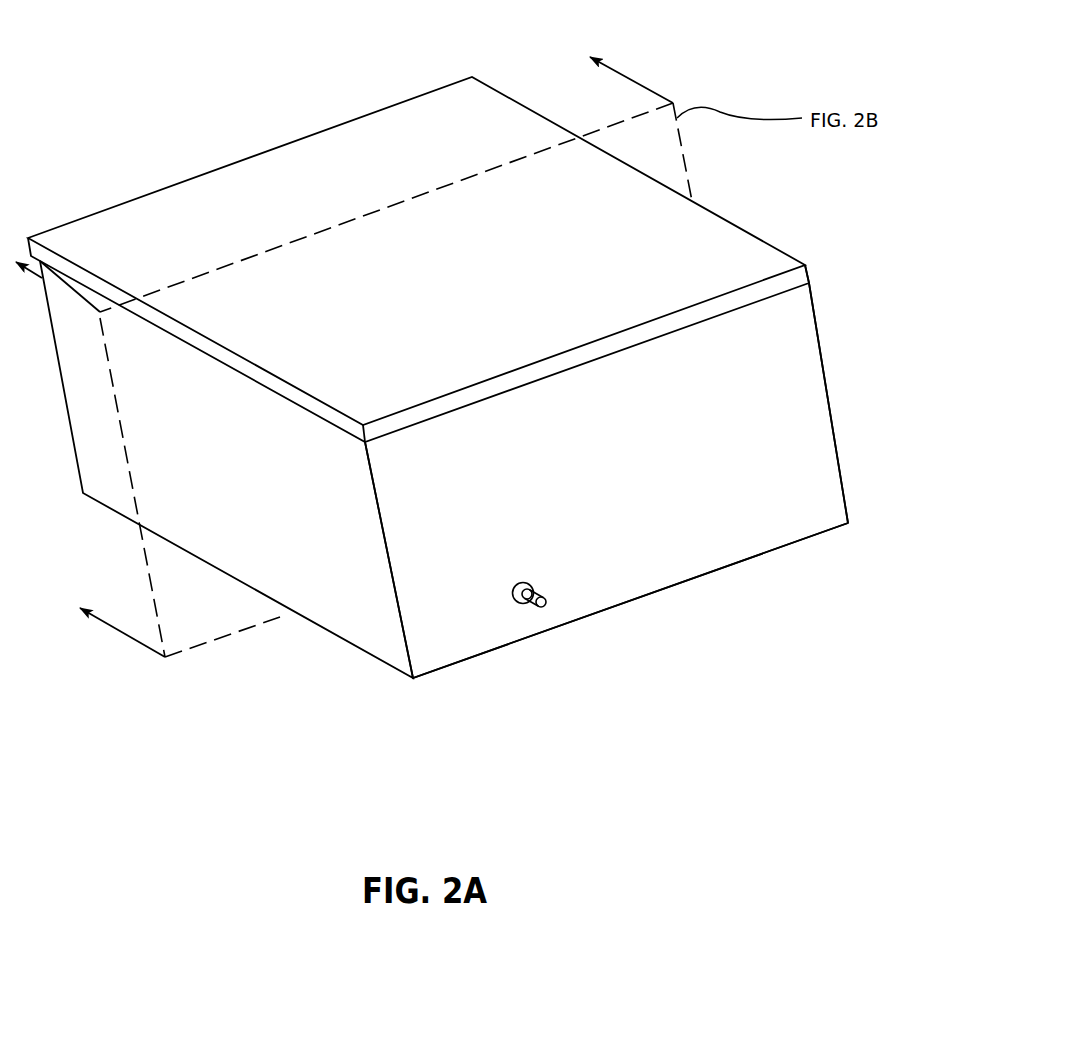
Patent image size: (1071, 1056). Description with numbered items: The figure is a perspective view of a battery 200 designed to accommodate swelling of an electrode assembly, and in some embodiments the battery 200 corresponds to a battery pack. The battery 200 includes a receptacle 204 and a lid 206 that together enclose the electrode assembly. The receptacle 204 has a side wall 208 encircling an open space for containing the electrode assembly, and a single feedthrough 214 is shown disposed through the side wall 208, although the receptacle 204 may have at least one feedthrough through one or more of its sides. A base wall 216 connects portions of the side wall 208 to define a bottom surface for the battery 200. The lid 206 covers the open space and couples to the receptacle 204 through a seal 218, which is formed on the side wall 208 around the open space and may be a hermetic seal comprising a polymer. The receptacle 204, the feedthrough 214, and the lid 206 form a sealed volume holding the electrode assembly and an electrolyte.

The battery 200 is at (223, 62).
The receptacle 204 is at (308, 622).
The lid 206 is at (388, 365).
The side wall 208 is at (620, 457).
The feedthrough 214 is at (547, 598).
The base wall 216 is at (755, 558).
The seal 218 is at (825, 270).